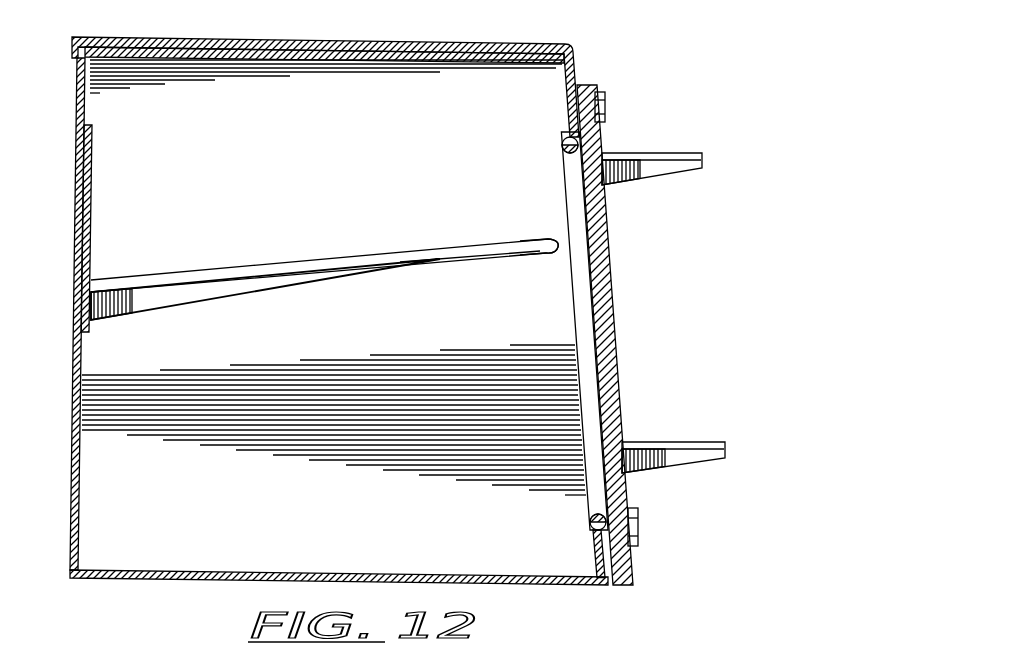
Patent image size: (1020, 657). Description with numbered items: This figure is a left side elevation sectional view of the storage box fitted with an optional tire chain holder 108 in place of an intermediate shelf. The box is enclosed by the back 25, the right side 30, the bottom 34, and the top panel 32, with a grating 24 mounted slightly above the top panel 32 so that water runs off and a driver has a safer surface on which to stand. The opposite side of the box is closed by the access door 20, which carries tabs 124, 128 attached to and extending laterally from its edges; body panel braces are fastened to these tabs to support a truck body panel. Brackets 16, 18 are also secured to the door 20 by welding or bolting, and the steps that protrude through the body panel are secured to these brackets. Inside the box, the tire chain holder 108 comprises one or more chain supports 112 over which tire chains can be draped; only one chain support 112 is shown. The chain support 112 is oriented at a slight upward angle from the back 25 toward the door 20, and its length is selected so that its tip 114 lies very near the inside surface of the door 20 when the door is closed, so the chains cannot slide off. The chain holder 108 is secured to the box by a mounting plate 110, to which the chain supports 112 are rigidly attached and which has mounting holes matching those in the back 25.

The bracket 16 is at (667, 442).
The bracket 18 is at (648, 152).
The access door 20 is at (618, 331).
The grating 24 is at (140, 37).
The back 25 is at (72, 403).
The right side 30 is at (338, 509).
The top panel 32 is at (320, 62).
The bottom 34 is at (523, 585).
The tire chain holder 108 is at (353, 300).
The mounting plate 110 is at (90, 235).
The chain support 112 is at (245, 263).
The tip 114 is at (548, 237).
The tab 124 is at (608, 108).
The tab 128 is at (640, 520).